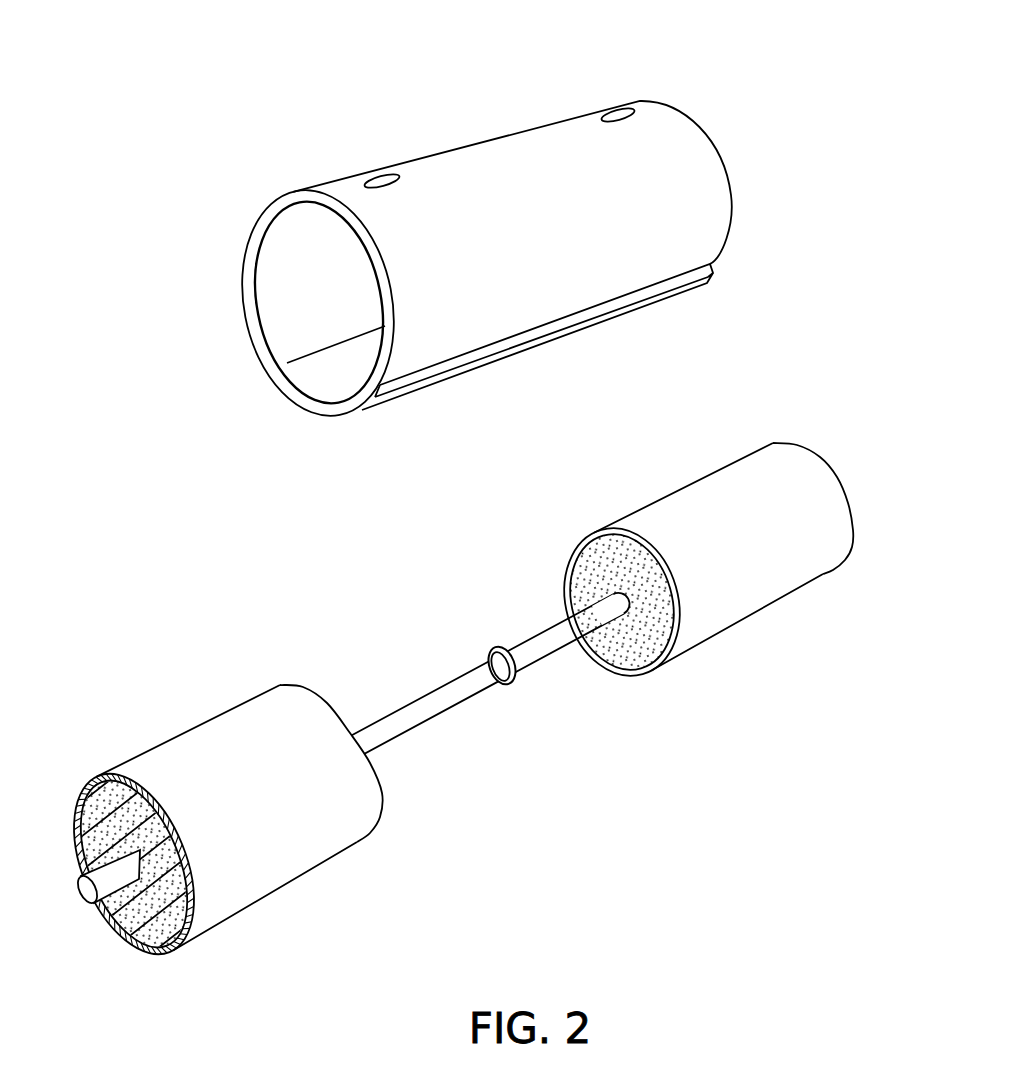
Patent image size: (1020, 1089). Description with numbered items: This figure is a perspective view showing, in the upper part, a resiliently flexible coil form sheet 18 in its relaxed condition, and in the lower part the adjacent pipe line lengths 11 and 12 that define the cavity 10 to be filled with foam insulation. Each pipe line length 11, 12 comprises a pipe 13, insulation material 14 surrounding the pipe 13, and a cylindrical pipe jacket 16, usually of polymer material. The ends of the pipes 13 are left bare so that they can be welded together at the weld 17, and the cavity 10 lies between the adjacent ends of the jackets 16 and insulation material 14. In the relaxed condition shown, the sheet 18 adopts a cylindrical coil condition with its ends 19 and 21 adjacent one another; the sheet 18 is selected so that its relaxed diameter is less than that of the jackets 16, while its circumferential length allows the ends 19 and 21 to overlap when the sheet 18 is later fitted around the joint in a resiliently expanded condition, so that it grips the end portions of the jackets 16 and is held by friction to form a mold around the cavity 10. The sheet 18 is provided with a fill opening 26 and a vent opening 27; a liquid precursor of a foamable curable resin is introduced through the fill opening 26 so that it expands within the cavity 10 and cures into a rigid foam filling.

The cavity 10 is at (426, 667).
The pipe line length 11 is at (153, 723).
The pipe line length 12 is at (700, 510).
The pipe 13 is at (435, 703).
The insulation material 14 is at (590, 565).
The cylindrical pipe jacket 16 is at (227, 757).
The weld 17 is at (513, 683).
The resiliently flexible coil form sheet 18 is at (448, 238).
The end of sheet 19 is at (350, 412).
The end of sheet 21 is at (333, 358).
The fill opening 26 is at (377, 172).
The vent opening 27 is at (613, 110).